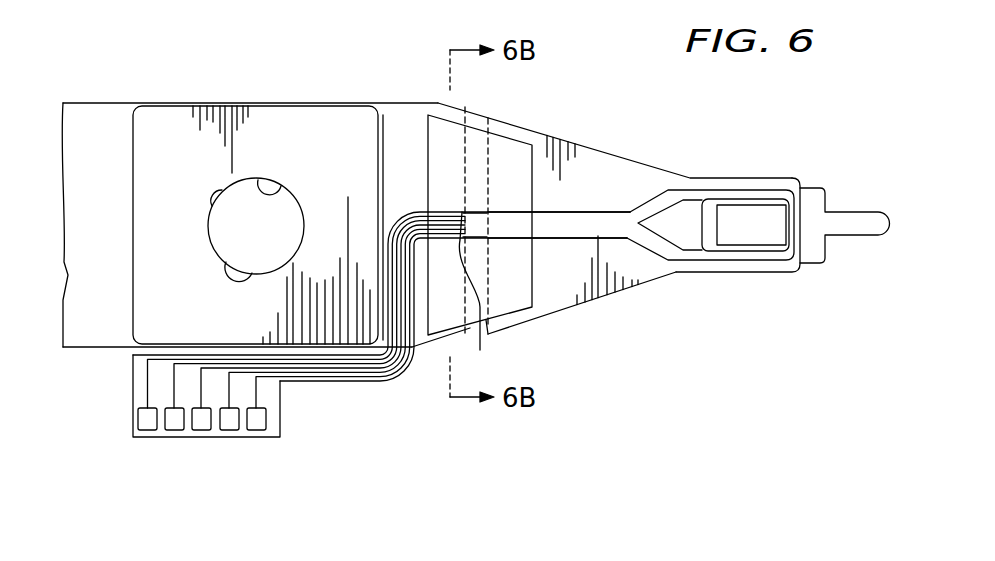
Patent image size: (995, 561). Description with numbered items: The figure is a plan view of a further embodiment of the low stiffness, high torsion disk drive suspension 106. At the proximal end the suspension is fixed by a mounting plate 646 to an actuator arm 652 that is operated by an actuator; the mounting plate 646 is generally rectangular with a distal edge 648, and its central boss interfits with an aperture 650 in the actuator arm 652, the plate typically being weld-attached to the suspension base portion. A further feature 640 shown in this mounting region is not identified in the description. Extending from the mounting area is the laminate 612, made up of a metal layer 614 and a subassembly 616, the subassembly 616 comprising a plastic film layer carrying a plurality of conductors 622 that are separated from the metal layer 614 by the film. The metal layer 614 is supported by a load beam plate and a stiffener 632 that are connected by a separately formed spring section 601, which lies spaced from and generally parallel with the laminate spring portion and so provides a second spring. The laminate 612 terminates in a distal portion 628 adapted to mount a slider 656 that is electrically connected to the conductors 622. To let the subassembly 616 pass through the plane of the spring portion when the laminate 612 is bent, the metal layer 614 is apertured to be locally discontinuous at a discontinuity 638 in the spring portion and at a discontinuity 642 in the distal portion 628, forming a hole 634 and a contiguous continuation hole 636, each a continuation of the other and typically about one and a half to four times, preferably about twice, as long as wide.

The disk drive suspension 106 is at (63, 92).
The actuator arm 652 is at (123, 110).
The mounting plate 646 is at (147, 212).
The distal edge 648 is at (280, 183).
The aperture 650 is at (223, 197).
The lower notch 640 is at (250, 273).
The conductors 622 is at (418, 207).
The hole 634 is at (480, 247).
The discontinuity 638 is at (462, 210).
The discontinuity 642 is at (492, 207).
The continuation hole 636 is at (493, 240).
The laminate 612 is at (607, 150).
The subassembly 616 is at (550, 187).
The metal layer 614 is at (607, 208).
The slider 656 is at (757, 217).
The distal portion 628 is at (650, 270).
The stiffener 632 is at (578, 306).
The spring section 601 is at (489, 335).